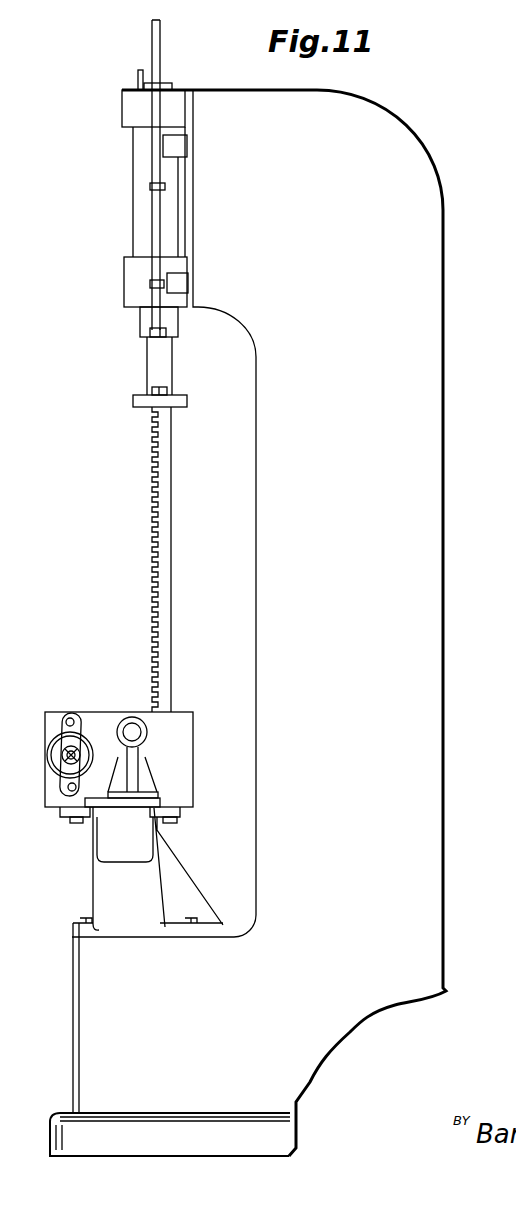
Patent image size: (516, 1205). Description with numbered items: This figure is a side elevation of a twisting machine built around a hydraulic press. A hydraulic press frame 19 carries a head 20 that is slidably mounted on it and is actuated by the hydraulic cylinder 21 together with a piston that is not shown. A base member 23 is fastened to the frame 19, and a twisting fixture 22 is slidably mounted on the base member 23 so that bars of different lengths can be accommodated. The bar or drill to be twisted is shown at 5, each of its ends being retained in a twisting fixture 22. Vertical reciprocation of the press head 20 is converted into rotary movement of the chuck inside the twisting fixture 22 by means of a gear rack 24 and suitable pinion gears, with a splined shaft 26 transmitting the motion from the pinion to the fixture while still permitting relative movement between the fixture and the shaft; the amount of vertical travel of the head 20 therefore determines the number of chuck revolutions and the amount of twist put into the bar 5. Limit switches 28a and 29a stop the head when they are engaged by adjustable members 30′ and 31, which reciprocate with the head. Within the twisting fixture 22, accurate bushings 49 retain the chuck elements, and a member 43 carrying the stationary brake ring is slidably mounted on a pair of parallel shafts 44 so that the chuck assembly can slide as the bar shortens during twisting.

The hydraulic press frame 19 is at (443, 552).
The hydraulic cylinder 21 is at (132, 188).
The limit switch 29a is at (189, 146).
The adjustable member 30′ is at (165, 187).
The limit switch 28a is at (189, 283).
The adjustable member 31 is at (150, 285).
The head 20 is at (140, 328).
The gear rack 24 is at (170, 493).
The twisting fixture 22 is at (88, 712).
The splined shaft 26 is at (146, 733).
The bushing 49 is at (102, 737).
The bar 5 is at (48, 743).
The parallel shaft 44 is at (67, 720).
The member 43 is at (70, 773).
The base member 23 is at (97, 885).